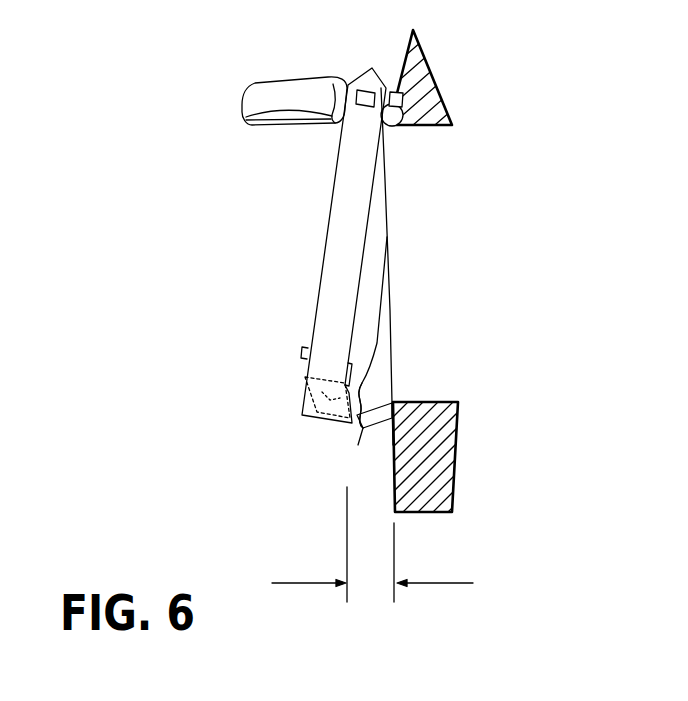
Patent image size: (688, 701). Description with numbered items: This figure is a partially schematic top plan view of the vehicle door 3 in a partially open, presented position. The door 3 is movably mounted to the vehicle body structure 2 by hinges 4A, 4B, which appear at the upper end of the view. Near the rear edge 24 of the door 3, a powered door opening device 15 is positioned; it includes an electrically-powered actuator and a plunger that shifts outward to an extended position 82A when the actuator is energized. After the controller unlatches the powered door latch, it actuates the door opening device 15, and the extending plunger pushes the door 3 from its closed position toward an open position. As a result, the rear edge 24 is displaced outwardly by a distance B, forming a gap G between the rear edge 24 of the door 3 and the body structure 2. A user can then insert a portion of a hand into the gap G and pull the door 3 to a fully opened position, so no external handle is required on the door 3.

The body structure 2 is at (386, 491).
The door 3 is at (305, 295).
The pillar garnish 4A, 4B is at (392, 117).
The powered door opening device 15 is at (343, 418).
The rear edge 24 is at (363, 425).
The extended position 82A is at (378, 425).
The gap G is at (368, 452).
The distance B is at (382, 584).